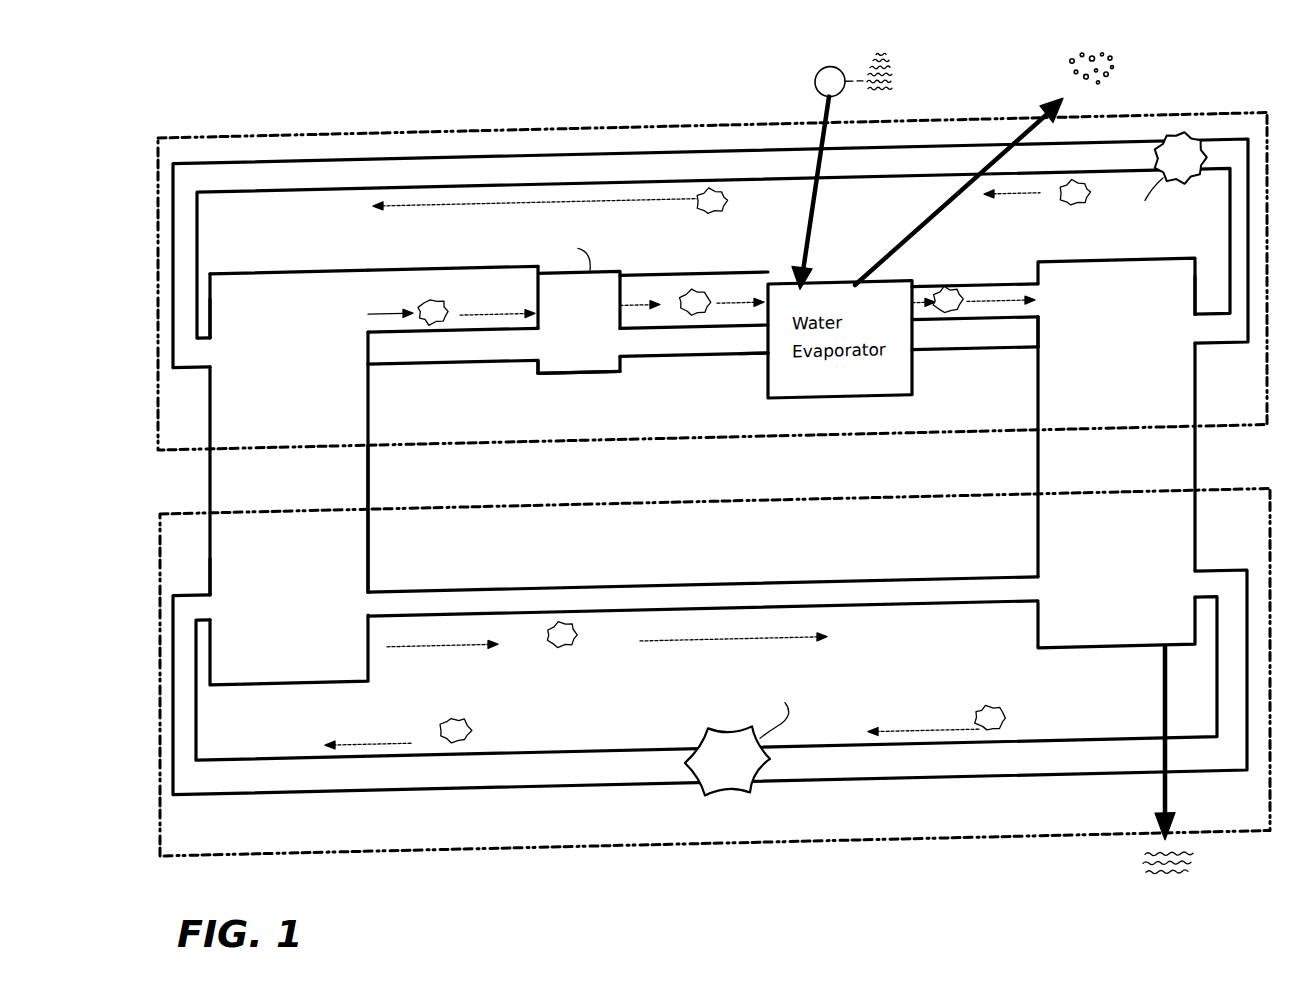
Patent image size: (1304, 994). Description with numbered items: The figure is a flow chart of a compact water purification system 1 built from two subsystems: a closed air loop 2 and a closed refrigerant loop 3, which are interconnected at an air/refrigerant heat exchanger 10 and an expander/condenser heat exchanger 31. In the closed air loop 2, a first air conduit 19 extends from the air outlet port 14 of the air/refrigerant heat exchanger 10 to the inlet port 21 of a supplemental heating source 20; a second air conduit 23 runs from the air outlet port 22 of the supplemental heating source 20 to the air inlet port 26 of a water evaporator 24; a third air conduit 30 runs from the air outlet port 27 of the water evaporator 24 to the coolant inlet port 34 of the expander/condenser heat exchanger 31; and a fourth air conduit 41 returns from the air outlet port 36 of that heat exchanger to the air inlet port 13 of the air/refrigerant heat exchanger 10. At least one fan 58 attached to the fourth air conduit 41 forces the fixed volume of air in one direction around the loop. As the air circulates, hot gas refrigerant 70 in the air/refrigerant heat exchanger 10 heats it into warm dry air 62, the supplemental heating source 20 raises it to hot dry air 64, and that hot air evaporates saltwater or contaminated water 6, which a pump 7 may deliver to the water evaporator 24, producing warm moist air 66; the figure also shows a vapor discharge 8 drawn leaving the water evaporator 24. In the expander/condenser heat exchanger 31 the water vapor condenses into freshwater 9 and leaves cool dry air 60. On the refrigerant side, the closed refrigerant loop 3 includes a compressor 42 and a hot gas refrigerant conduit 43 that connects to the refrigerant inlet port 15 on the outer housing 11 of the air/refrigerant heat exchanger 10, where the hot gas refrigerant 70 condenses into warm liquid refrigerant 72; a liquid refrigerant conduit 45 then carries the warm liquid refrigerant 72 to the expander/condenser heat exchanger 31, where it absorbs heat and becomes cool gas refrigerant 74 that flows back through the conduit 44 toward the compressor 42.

The water purification system 1 is at (157, 103).
The closed air loop 2 is at (155, 200).
The closed refrigerant loop 3 is at (157, 552).
The saltwater or contaminated water 6 is at (896, 92).
The pump 7 is at (826, 82).
The vapor / steam outlet 8 is at (1100, 90).
The freshwater 9 is at (1144, 863).
The air/refrigerant heat exchanger 10 is at (370, 277).
The outer housing 11 is at (372, 550).
The air inlet port 13 is at (212, 351).
The air outlet port 14 is at (362, 353).
The refrigerant inlet port 15 is at (213, 606).
The first air conduit 19 is at (470, 372).
The supplemental heating source 20 is at (613, 284).
The inlet port 21 is at (532, 365).
The air outlet port 22 is at (617, 367).
The second air conduit 23 is at (715, 375).
The water evaporator 24 is at (790, 300).
The air inlet port 26 is at (760, 369).
The air outlet port 27 is at (912, 362).
The third air conduit 30 is at (1010, 371).
The expander/condenser heat exchanger 31 is at (1033, 295).
The coolant inlet port 34 is at (1038, 355).
The air outlet port 36 is at (1156, 301).
The fourth air conduit 41 is at (200, 229).
The compressor 42 is at (700, 757).
The hot gas refrigerant conduit 43 is at (437, 796).
The cold air return duct (right) 44 is at (912, 796).
The liquid refrigerant conduit 45 is at (545, 594).
The fan 58 is at (1198, 152).
The cool dry air 60 is at (727, 218).
The warm dry air 62 is at (435, 306).
The hot dry air 64 is at (695, 306).
The warm moist air 66 is at (950, 307).
The hot gas refrigerant 70 is at (470, 722).
The warm liquid refrigerant 72 is at (580, 660).
The cool gas refrigerant 74 is at (1005, 724).